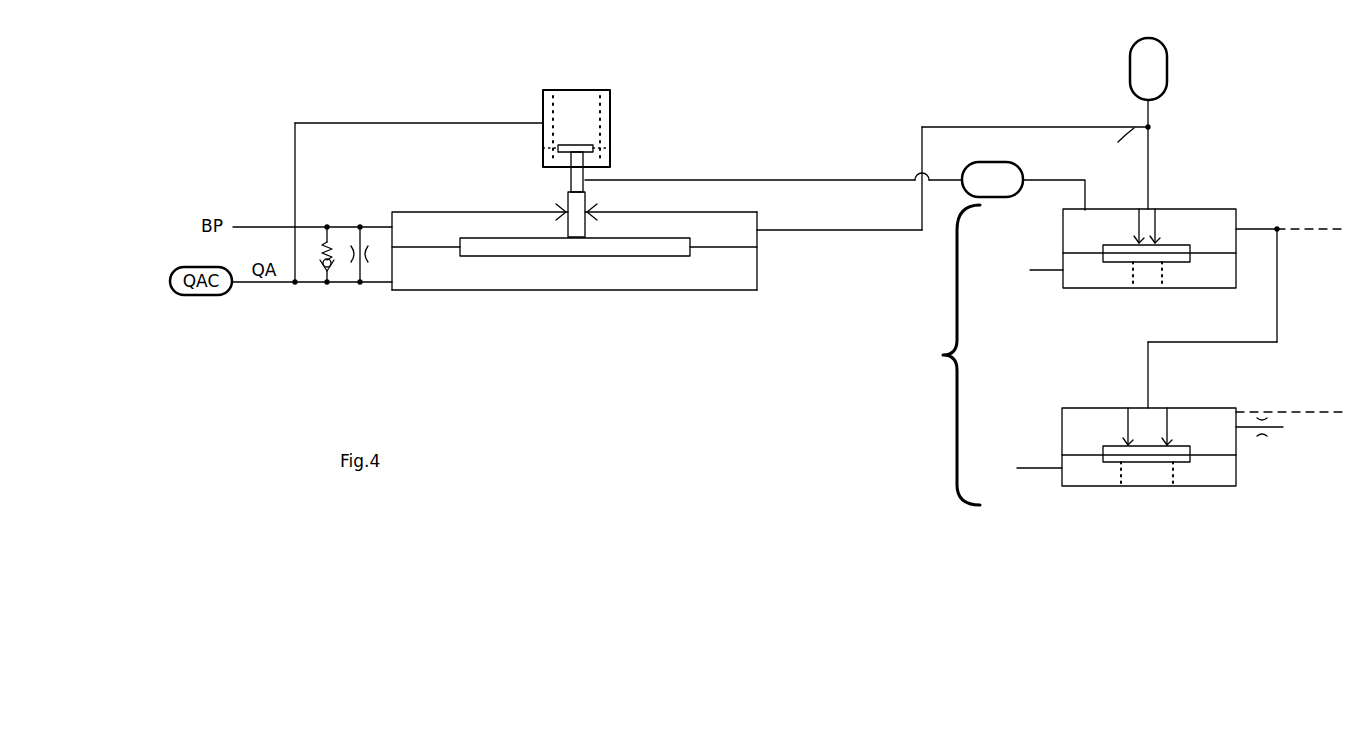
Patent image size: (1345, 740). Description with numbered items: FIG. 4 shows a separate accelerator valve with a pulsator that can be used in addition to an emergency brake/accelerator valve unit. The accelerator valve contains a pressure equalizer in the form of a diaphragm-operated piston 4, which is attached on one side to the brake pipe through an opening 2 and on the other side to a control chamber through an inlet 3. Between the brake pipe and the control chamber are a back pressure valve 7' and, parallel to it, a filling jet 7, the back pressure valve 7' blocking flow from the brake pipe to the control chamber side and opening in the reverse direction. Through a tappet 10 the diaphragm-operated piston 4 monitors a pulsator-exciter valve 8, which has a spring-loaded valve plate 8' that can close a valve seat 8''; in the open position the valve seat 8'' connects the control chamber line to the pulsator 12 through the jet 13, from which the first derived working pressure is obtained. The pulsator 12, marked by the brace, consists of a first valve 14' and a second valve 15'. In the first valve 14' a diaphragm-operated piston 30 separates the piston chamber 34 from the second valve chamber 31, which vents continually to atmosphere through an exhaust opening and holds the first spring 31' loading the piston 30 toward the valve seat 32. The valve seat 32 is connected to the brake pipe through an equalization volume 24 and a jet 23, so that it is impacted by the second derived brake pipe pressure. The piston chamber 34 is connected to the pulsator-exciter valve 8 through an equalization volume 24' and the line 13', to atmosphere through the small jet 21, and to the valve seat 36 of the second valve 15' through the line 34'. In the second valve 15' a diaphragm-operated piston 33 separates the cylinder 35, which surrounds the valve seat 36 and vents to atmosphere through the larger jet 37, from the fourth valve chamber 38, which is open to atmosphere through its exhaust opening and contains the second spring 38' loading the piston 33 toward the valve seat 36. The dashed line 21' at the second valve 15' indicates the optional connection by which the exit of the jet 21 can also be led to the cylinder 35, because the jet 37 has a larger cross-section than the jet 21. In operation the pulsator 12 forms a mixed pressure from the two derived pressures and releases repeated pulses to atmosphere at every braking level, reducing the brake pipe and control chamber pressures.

The opening 2 is at (392, 216).
The inlet 3 is at (390, 288).
The diaphragm-operated piston 4 is at (642, 257).
The filling jet 7 is at (334, 233).
The back pressure valve 7' is at (339, 274).
The pulsator-exciter valve 8 is at (610, 114).
The spring-loaded valve plate 8' is at (575, 130).
The valve seat 8'' is at (558, 161).
The tappet 10 is at (588, 201).
The pulsator 12 is at (947, 355).
The jet 13 is at (750, 159).
The line 13' is at (952, 178).
The first valve 14' is at (1149, 213).
The second valve 15' is at (1157, 424).
The jet 21 is at (1311, 243).
The second brake cylinder line 21' is at (1290, 387).
The jet 23 is at (1103, 133).
The equalization volume 24 is at (1157, 123).
The equalization volume 24' is at (1023, 174).
The diaphragm-operated piston 30 is at (1118, 263).
The second valve chamber 31 is at (1063, 290).
The first spring 31' is at (1187, 290).
The valve seat 32 is at (1136, 242).
The diaphragm-operated piston 33 is at (1112, 463).
The piston chamber 34 is at (1250, 204).
The line 34' is at (1242, 318).
The cylinder 35 is at (1096, 424).
The valve seat 36 is at (1126, 442).
The jet 37 is at (1263, 440).
The fourth valve chamber 38 is at (1053, 489).
The second spring 38' is at (1203, 491).